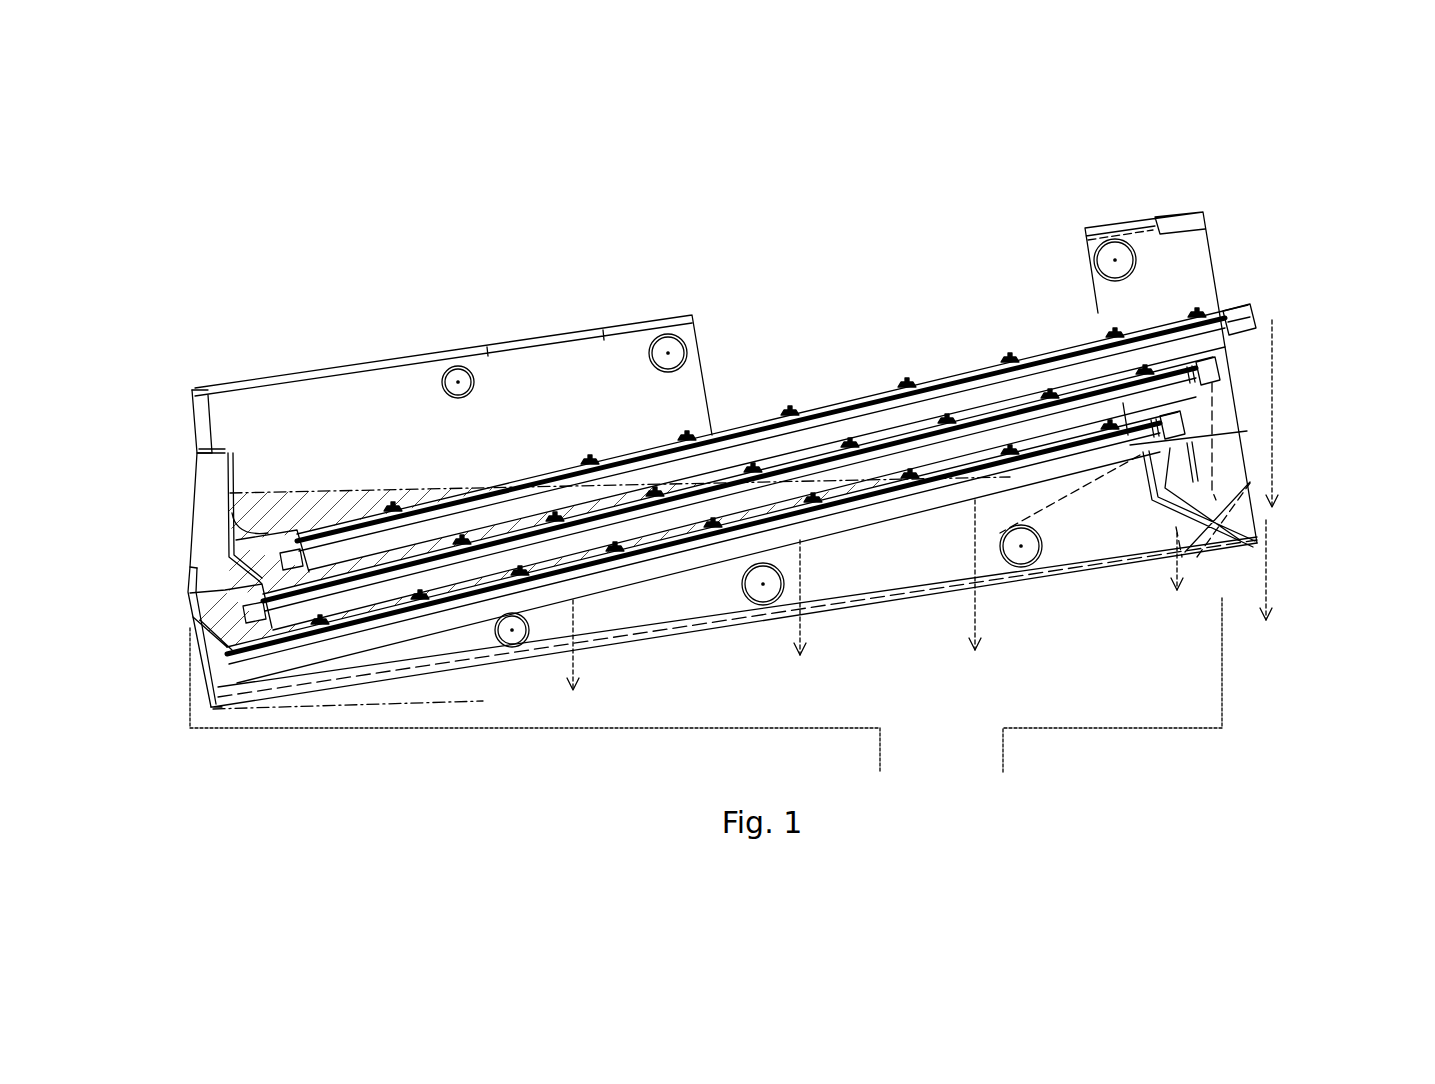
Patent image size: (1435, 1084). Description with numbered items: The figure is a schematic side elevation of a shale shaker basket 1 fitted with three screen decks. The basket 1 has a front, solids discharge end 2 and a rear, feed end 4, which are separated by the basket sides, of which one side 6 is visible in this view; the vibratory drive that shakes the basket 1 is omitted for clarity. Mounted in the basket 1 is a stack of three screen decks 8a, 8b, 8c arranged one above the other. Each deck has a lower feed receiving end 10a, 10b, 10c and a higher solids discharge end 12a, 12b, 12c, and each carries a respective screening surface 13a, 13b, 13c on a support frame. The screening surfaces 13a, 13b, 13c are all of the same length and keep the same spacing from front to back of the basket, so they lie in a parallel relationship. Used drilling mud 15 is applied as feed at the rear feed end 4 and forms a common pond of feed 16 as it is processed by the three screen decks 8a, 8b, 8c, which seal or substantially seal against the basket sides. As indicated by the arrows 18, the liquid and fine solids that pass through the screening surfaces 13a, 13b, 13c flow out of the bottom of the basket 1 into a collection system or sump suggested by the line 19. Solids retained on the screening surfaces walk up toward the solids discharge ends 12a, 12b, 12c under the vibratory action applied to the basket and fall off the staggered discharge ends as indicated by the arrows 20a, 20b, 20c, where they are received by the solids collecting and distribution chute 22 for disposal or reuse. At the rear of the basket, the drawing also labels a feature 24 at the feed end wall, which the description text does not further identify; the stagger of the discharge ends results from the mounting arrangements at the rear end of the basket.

The shale shaker basket 1 is at (952, 210).
The solids discharge end 2 is at (1310, 436).
The feed end 4 is at (180, 493).
The basket side 6 is at (917, 562).
The screen deck 8a is at (967, 473).
The screen deck 8b is at (990, 430).
The screen deck 8c is at (1010, 370).
The feed receiving end 10a is at (340, 647).
The feed receiving end 10b is at (360, 550).
The feed receiving end 10c is at (390, 517).
The solids discharge end 12a is at (1130, 437).
The solids discharge end 12b is at (1160, 380).
The solids discharge end 12c is at (1197, 333).
The screening surface 13a is at (770, 510).
The screening surface 13b is at (795, 465).
The screening surface 13c is at (822, 403).
The used drilling mud 15 is at (247, 428).
The common pond of feed 16 is at (283, 505).
The arrows 18 is at (575, 618).
The line 19 is at (1222, 690).
The arrow 20a is at (1267, 575).
The arrow 20b is at (1182, 593).
The arrow 20c is at (1272, 478).
The solids collecting and distribution chute 22 is at (1350, 524).
The feed end wall 24 is at (190, 602).